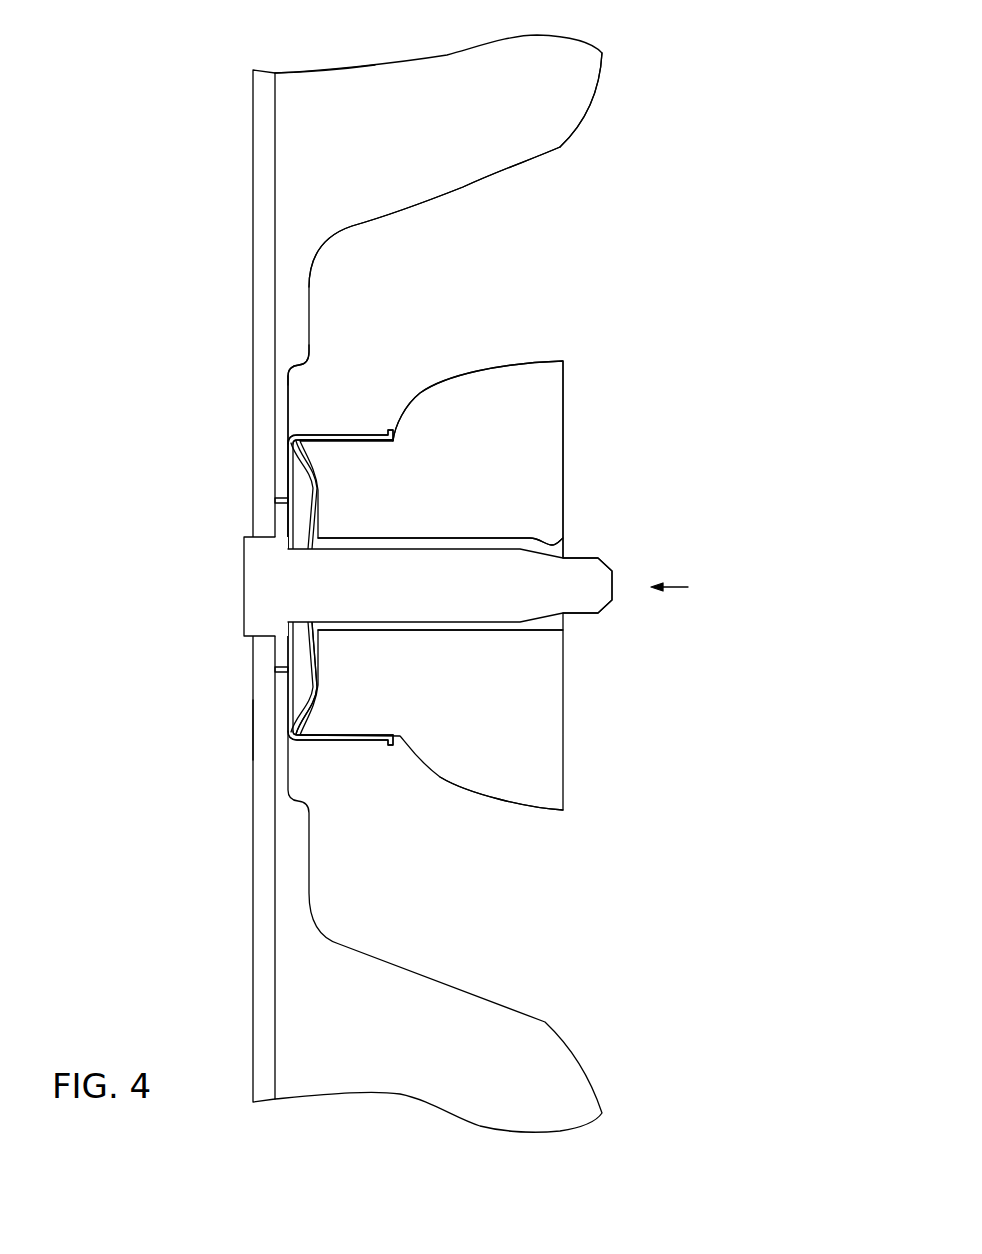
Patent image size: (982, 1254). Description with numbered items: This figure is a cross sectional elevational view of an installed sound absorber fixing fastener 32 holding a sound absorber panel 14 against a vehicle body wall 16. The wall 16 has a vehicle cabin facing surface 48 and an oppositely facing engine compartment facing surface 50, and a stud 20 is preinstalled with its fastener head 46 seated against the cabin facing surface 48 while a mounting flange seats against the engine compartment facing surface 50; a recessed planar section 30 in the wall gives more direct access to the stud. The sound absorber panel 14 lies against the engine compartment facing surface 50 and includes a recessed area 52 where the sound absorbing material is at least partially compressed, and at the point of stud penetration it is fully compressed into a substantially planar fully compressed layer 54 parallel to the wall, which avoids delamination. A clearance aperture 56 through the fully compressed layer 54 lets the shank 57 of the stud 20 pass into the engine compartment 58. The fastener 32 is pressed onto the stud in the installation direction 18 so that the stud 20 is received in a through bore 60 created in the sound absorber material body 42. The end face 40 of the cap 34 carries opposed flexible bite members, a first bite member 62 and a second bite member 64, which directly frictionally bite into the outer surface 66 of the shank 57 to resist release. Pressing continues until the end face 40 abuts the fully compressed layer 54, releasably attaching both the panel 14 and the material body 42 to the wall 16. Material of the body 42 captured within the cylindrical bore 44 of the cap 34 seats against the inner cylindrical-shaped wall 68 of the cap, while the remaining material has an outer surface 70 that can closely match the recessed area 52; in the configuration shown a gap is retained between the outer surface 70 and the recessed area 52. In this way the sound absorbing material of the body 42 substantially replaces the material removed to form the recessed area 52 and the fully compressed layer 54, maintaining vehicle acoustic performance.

The sound absorber panel 14 is at (498, 148).
The vehicle body wall 16 is at (252, 117).
The installation direction 18 is at (688, 587).
The first stud 20 is at (549, 598).
The recessed planar section 30 is at (296, 363).
The sound absorber fixing fastener 32 is at (607, 391).
The cap 34 is at (358, 433).
The end face 40 is at (278, 457).
The sound absorber material body 42 is at (528, 468).
The cylindrical bore 44 is at (360, 752).
The fastener head 46 is at (300, 566).
The vehicle cabin facing surface 48 is at (240, 728).
The engine compartment facing surface 50 is at (288, 83).
The recessed area 52 is at (586, 134).
The fully compressed layer 54 is at (289, 397).
The clearance aperture 56 is at (278, 668).
The shank 57 is at (522, 569).
The engine compartment 58 is at (478, 247).
The through bore 60 is at (539, 546).
The first bite member 62 is at (298, 519).
The second bite member 64 is at (297, 642).
The outer surface 66 is at (508, 633).
The inner cylindrical-shaped wall 68 is at (356, 448).
The outer surface 70 is at (519, 816).